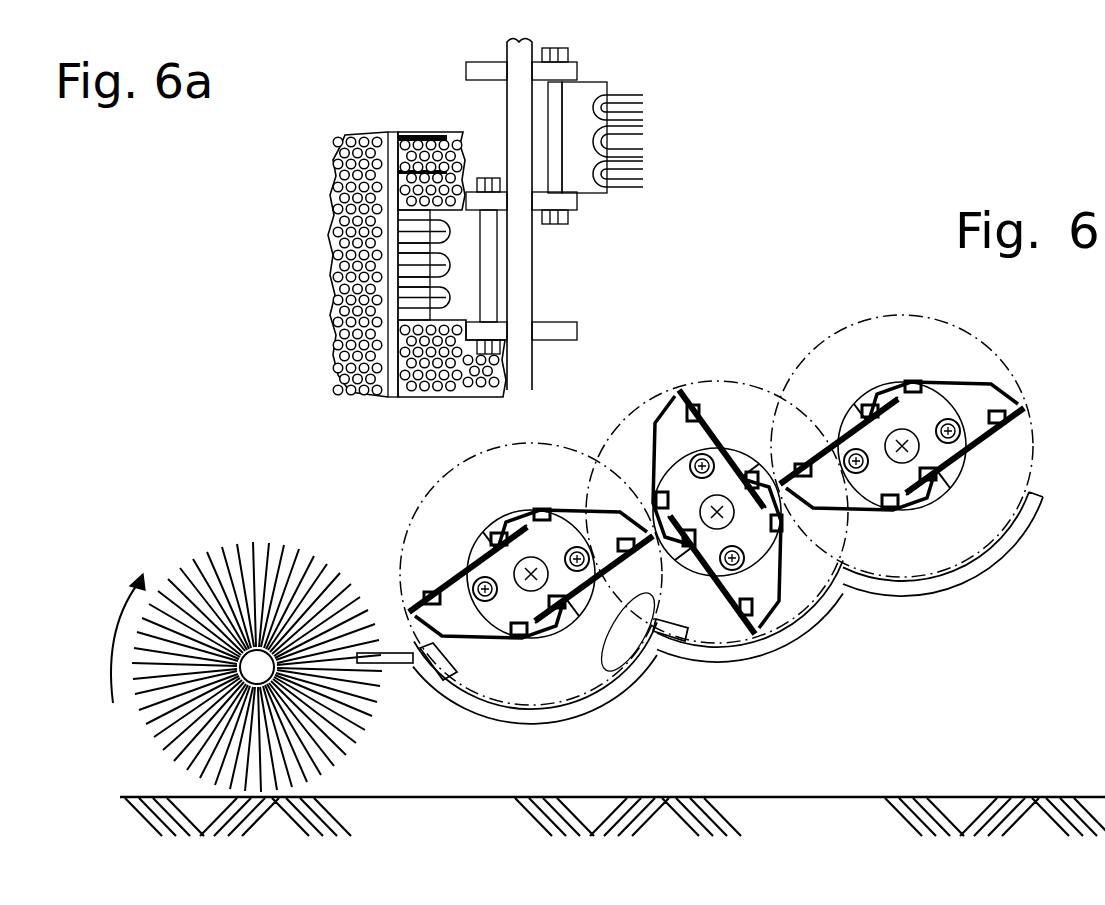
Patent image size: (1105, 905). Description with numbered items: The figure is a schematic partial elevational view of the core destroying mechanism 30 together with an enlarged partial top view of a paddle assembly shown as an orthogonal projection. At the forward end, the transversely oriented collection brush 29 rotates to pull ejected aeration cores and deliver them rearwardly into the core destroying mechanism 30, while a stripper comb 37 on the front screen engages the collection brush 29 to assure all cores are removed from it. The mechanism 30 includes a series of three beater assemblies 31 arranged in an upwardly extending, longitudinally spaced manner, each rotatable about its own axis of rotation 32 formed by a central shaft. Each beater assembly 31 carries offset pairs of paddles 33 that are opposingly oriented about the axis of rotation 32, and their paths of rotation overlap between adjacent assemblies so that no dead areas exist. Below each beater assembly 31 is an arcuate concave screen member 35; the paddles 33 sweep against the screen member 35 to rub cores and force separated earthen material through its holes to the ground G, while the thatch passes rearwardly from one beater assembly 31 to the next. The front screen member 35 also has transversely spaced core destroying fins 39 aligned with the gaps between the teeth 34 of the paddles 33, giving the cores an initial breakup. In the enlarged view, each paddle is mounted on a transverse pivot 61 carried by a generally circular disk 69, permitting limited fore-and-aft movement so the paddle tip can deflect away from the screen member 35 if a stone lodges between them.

In FIG. 6, the collection brush 29 is at (212, 551).
In FIG. 6, the core destroying mechanism 30 is at (945, 626).
In FIG. 6, the beater assembly 31 is at (429, 489).
In FIG. 6a, the axis of rotation 32 is at (522, 55).
In FIG. 6a, the paddle 33 is at (573, 108).
In FIG. 6, the paddle 33 is at (410, 612).
In FIG. 6a, the teeth 34 is at (645, 185).
In FIG. 6a, the concave screen member 35 is at (330, 240).
In FIG. 6, the concave screen member 35 is at (773, 640).
In FIG. 6, the stripper comb 37 is at (393, 665).
In FIG. 6a, the core destroying fin 39 is at (433, 137).
In FIG. 6, the core destroying fin 39 is at (607, 672).
In FIG. 6a, the transverse pivot 61 is at (558, 148).
In FIG. 6a, the circular disk 69 is at (477, 180).
In FIG. 6, the ground G is at (785, 797).